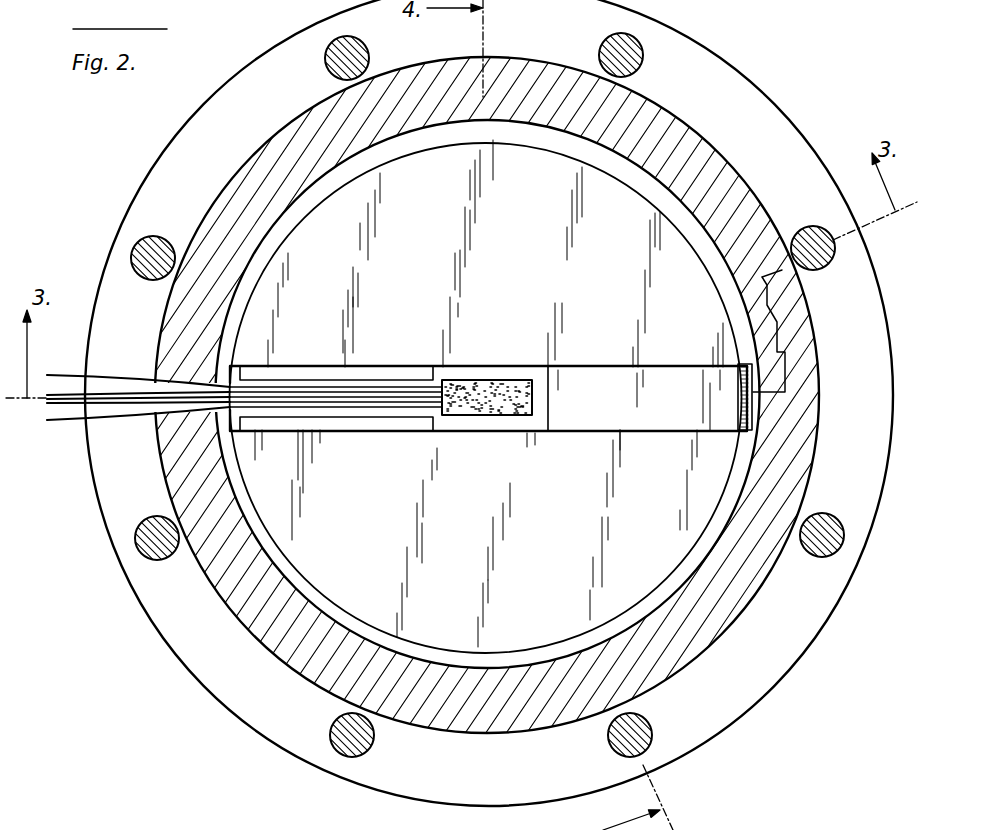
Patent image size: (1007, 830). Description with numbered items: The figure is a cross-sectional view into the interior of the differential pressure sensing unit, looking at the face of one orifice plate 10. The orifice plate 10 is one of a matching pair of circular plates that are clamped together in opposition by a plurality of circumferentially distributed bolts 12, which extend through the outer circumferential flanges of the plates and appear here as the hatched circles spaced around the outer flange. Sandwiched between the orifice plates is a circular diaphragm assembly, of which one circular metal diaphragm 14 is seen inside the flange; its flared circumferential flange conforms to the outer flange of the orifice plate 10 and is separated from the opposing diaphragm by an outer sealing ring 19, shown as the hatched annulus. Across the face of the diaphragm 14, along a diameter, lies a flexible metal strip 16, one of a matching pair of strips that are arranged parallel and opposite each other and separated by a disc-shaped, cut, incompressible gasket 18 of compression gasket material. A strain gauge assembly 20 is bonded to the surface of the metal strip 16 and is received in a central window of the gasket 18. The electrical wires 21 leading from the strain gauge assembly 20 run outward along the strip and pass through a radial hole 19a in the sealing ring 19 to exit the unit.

The orifice plate 10 is at (748, 107).
The bolts 12 is at (143, 240).
The circular metal diaphragm 14 is at (240, 331).
The flexible metal strip 16 is at (402, 380).
The gasket 18 is at (598, 288).
The sealing ring 19 is at (803, 442).
The radial hole 19a is at (157, 443).
The strain gauge assembly 20 is at (512, 402).
The electrical wires 21 is at (350, 398).